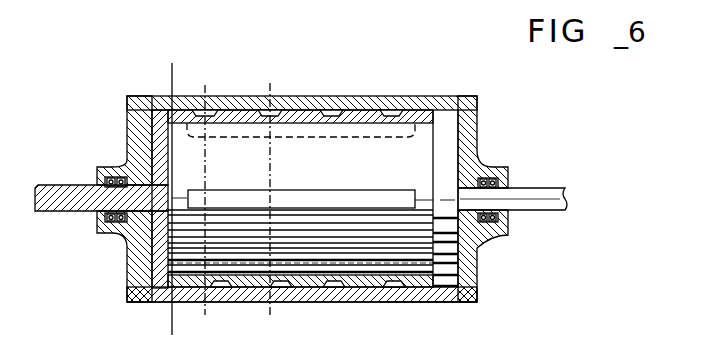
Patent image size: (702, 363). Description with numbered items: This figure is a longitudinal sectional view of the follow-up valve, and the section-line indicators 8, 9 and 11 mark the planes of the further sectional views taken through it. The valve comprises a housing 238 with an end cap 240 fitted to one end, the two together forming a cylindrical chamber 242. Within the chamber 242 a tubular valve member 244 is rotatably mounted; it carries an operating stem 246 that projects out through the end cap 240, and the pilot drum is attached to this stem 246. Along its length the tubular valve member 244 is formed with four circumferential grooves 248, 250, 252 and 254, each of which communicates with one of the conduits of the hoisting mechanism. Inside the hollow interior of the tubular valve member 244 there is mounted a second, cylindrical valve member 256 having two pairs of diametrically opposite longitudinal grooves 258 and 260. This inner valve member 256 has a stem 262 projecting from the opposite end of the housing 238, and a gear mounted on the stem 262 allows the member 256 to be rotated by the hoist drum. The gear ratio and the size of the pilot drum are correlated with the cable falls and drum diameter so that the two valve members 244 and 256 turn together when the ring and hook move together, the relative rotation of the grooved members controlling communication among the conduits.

The housing 238 is at (327, 98).
The cylindrical chamber 242 is at (385, 100).
The tubular valve member 244 is at (157, 122).
The end cap 240 is at (133, 140).
The operating stem 246 is at (85, 213).
The second cylindrical valve member 256 is at (413, 160).
The stem 262 is at (517, 195).
The longitudinal grooves 260 is at (327, 138).
The longitudinal grooves 258 is at (317, 203).
The circumferential groove 248 is at (210, 285).
The circumferential groove 250 is at (282, 296).
The circumferential groove 252 is at (338, 303).
The circumferential groove 254 is at (400, 303).
The section line 8- 8 is at (191, 318).
The section line 9- 9 is at (259, 318).
The section line 11- 11 is at (186, 338).